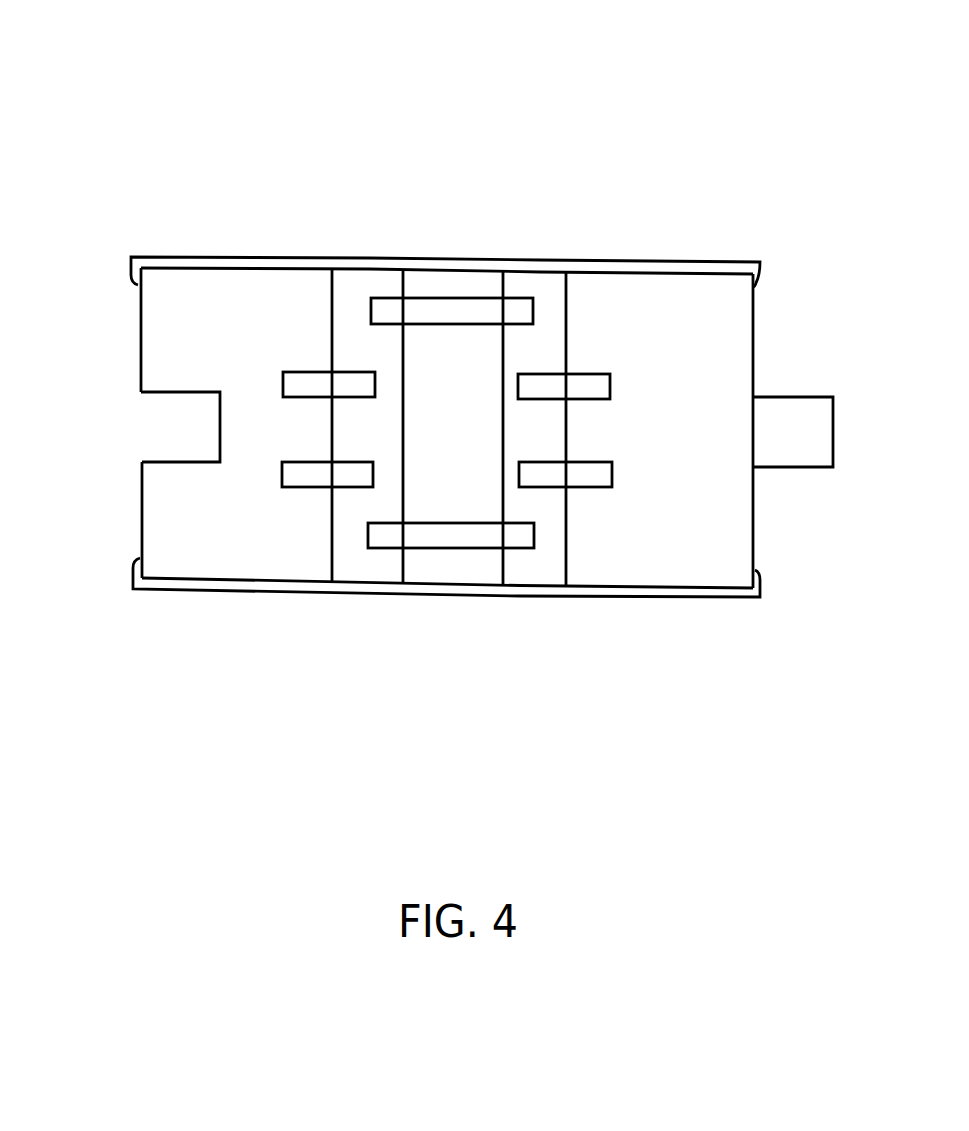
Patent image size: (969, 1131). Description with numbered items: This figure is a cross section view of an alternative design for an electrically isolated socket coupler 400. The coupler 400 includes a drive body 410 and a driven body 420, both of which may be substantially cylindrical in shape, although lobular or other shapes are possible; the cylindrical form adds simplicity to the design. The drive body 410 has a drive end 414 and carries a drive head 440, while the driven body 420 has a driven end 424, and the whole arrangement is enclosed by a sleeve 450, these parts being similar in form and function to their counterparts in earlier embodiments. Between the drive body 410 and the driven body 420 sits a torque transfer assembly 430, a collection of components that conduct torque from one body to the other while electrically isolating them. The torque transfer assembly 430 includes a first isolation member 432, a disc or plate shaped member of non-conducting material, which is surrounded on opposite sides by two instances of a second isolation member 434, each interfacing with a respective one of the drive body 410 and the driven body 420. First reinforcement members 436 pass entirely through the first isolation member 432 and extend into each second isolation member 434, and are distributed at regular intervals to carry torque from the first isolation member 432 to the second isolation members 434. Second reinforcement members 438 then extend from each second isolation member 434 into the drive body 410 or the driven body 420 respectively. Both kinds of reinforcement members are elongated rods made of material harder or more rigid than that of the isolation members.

The coupler 400 is at (148, 112).
The drive body 410 is at (637, 555).
The drive end 414 is at (753, 345).
The driven body 420 is at (291, 557).
The driven end 424 is at (138, 362).
The torque transfer assembly 430 is at (383, 585).
The first isolation member 432 is at (473, 278).
The second isolation member 434 is at (348, 287).
The first reinforcement member 436 is at (391, 308).
The second reinforcement member 438 is at (312, 382).
The drive head 440 is at (780, 453).
The sleeve 450 is at (749, 263).